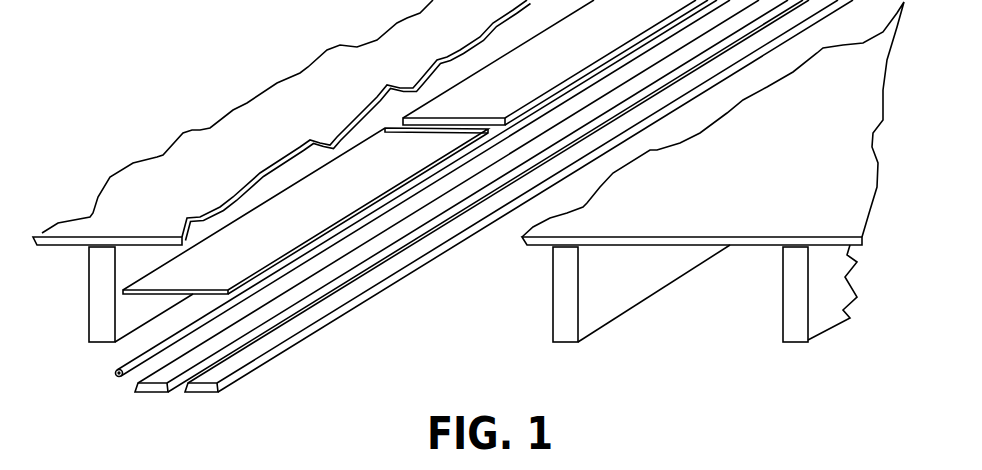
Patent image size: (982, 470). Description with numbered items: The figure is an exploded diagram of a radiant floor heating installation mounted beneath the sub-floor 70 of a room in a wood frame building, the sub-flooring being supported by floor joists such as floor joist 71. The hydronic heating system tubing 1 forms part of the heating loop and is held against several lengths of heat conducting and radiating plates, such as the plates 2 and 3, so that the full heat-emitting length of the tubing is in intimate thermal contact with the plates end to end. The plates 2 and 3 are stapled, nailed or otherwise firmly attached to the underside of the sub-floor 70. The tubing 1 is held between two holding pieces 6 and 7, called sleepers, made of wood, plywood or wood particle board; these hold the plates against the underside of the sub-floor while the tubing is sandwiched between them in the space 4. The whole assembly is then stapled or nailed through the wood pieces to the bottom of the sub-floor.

The hydronic heating system tubing 1 is at (115, 373).
The heat conducting and radiating plate 2 is at (152, 296).
The heat conducting and radiating plate 3 is at (593, 32).
The space 4 is at (168, 399).
The holding piece 6 is at (145, 393).
The holding piece 7 is at (200, 393).
The sub-floor 70 is at (183, 180).
The floor joist 71 is at (88, 278).